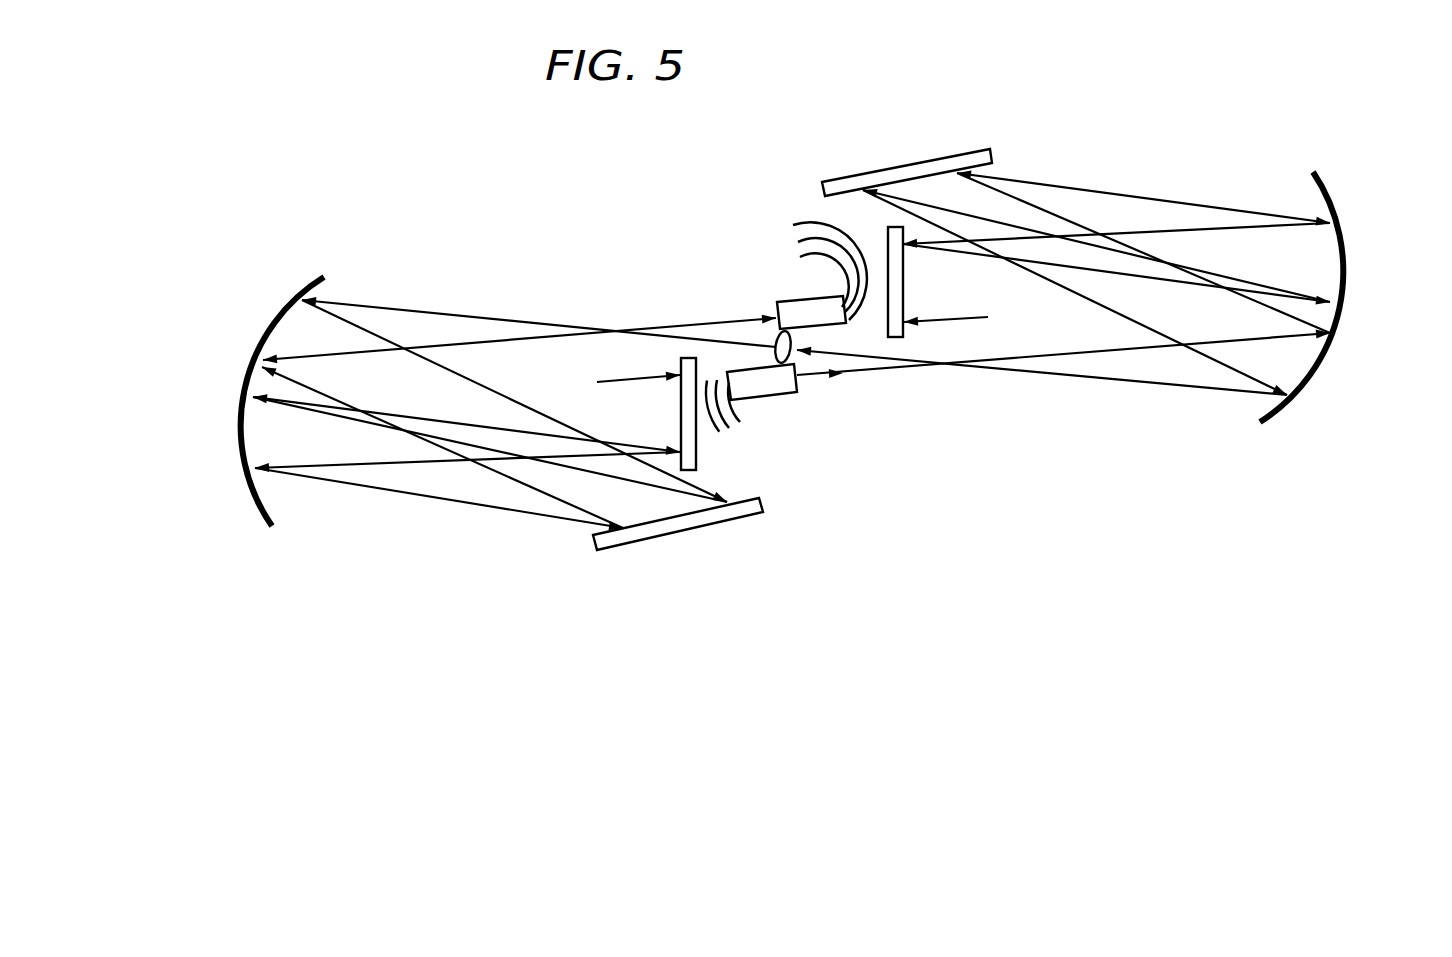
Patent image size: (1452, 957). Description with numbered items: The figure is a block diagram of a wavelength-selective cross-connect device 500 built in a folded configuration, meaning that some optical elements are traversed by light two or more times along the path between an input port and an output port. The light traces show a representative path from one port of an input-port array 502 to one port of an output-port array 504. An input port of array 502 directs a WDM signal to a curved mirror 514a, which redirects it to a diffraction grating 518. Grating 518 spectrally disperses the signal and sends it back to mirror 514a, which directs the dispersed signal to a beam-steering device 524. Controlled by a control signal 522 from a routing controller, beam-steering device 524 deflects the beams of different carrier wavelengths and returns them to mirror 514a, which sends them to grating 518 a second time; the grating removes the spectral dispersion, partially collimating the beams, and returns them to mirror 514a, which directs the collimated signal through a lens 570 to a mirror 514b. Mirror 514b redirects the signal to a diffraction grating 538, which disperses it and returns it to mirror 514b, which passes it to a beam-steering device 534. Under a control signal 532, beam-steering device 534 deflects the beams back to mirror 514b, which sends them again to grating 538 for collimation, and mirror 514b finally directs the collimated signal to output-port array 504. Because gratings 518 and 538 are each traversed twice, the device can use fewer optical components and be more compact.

The WSXC device 500 is at (635, 124).
The input-port array 502 is at (760, 400).
The output-port array 504 is at (792, 301).
The curved mirror 514a is at (1343, 263).
The mirror 514b is at (242, 445).
The diffraction grating 518 is at (936, 152).
The control signal 522 is at (988, 317).
The beam-steering device 524 is at (903, 288).
The control signal 532 is at (598, 381).
The beam-steering device 534 is at (681, 410).
The diffraction grating 538 is at (692, 530).
The lens 570 is at (776, 352).